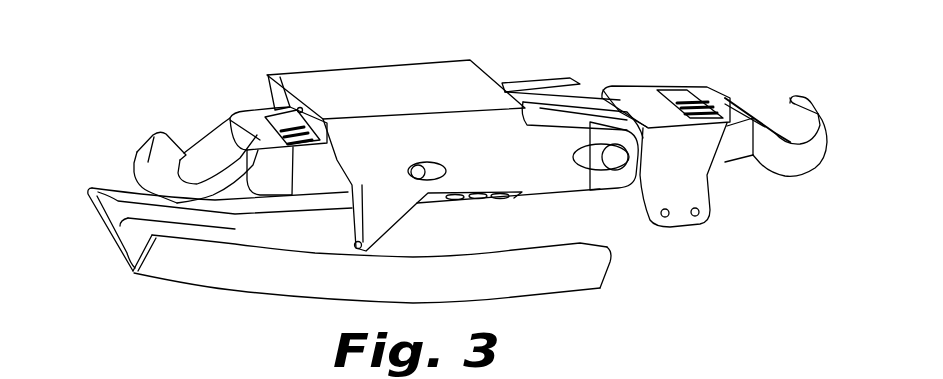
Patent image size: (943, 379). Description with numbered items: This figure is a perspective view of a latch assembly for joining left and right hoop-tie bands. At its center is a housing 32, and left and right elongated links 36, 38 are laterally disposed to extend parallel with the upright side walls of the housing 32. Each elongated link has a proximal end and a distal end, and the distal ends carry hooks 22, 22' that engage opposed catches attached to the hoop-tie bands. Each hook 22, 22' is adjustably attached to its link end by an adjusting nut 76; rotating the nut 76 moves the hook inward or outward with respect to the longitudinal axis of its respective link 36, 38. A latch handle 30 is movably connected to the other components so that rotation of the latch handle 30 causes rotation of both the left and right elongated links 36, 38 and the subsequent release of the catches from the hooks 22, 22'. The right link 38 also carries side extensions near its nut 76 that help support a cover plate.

The hook 22 is at (177, 148).
The hook 22' is at (793, 107).
The latch handle 30 is at (110, 243).
The housing 32 is at (370, 63).
The left elongated link 36 is at (256, 118).
The right elongated link 38 is at (638, 100).
The adjusting nut 76 is at (290, 130).